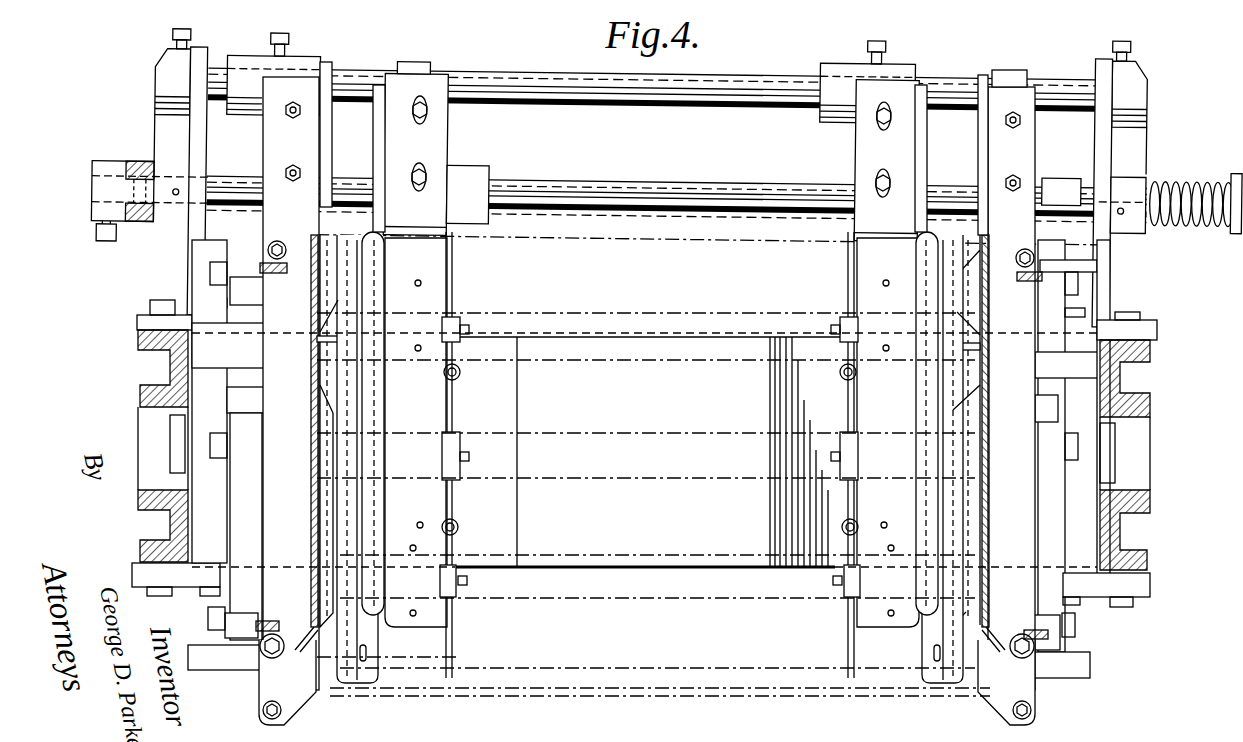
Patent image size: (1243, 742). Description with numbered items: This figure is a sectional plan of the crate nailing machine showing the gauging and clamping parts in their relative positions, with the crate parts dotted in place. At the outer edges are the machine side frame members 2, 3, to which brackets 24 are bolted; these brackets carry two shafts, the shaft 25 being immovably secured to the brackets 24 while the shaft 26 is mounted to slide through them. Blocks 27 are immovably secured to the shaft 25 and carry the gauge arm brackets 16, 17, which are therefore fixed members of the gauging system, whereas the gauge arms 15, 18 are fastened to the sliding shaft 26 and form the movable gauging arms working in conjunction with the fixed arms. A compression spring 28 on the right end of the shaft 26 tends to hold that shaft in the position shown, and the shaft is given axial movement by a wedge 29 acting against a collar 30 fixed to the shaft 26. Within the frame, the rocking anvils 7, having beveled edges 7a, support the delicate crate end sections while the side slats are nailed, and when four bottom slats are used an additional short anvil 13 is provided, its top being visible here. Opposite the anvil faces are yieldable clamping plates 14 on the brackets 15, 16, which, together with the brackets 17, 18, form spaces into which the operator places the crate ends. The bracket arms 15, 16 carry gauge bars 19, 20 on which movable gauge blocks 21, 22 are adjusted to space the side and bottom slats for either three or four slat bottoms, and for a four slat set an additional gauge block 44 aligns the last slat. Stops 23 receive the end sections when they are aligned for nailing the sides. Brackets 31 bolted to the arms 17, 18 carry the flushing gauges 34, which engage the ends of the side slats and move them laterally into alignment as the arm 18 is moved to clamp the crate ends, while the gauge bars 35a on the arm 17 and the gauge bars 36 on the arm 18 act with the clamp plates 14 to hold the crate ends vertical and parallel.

The side frame member 2 is at (199, 455).
The side frame member 3 is at (1095, 459).
The rocking anvil 7 is at (644, 459).
The beveled edge 7a is at (319, 252).
The short anvil 13 is at (652, 344).
The clamping plate 14 is at (368, 509).
The bracket 15 is at (416, 432).
The bracket 16 is at (888, 432).
The bracket 17 is at (291, 383).
The bracket 18 is at (1011, 380).
The gauge bar 19 is at (454, 400).
The gauge bar 20 is at (848, 405).
The gauge block 21 is at (462, 338).
The gauge block 22 is at (842, 337).
The stop 23 is at (333, 343).
The bracket 24 is at (172, 139).
The shaft 25 is at (627, 100).
The shaft 26 is at (592, 182).
The block 27 is at (240, 78).
The compression spring 28 is at (1215, 189).
The wedge 29 is at (140, 229).
The collar 30 is at (103, 174).
The bracket 31 is at (275, 273).
The flushing gauge 34 is at (312, 493).
The gauge bar 35a is at (287, 679).
The gauge bar 36 is at (1006, 679).
The gauge block 44 is at (732, 153).